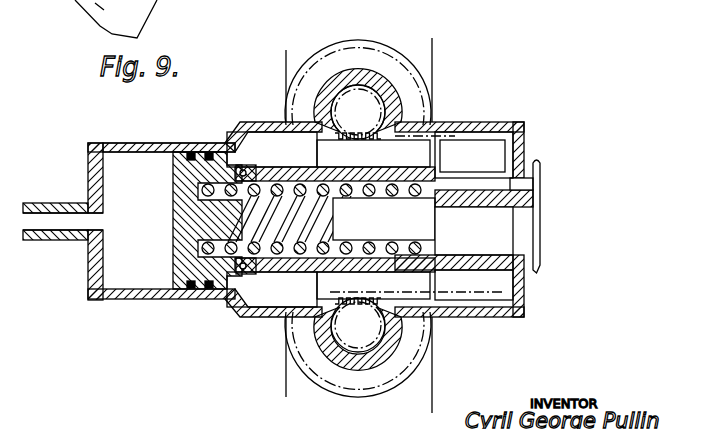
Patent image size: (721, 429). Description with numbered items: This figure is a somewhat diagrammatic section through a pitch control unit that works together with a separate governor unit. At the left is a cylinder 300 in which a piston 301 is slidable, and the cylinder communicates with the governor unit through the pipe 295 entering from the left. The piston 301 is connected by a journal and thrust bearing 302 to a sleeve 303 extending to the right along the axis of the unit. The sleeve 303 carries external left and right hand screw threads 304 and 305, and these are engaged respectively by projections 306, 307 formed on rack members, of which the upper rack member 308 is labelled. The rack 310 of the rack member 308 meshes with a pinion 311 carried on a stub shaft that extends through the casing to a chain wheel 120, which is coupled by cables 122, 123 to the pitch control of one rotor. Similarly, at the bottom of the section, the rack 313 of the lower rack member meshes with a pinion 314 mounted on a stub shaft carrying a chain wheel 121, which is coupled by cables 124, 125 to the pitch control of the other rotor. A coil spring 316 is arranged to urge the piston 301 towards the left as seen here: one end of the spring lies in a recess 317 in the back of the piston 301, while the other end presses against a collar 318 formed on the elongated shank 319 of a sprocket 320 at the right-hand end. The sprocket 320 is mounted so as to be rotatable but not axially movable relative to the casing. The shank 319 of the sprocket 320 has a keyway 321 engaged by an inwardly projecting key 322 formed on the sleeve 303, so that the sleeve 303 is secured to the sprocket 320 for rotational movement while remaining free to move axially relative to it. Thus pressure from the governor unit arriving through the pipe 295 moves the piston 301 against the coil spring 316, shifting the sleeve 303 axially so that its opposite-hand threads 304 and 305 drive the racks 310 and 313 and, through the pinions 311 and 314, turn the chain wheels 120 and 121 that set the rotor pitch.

The chain wheel 120 is at (385, 44).
The chain wheel 121 is at (372, 380).
The cable 122 is at (286, 50).
The cable 123 is at (432, 48).
The cable 124 is at (286, 385).
The cable 125 is at (432, 390).
The pipe 295 is at (75, 218).
The cylinder 300 is at (130, 300).
The piston 301 is at (195, 290).
The journal and thrust bearing 302 is at (232, 290).
The sleeve 303 is at (280, 262).
The left hand screw thread 304 is at (318, 176).
The right hand screw thread 305 is at (336, 262).
The projection 306 is at (413, 187).
The projection 307 is at (376, 263).
The rack member 308 is at (470, 121).
The rack 310 is at (403, 128).
The pinion 311 is at (352, 102).
The rack 313 is at (408, 320).
The pinion 314 is at (356, 335).
The coil spring 316 is at (400, 232).
The recess 317 is at (218, 185).
The collar 318 is at (432, 246).
The elongated shank 319 is at (454, 253).
The sprocket 320 is at (538, 268).
The keyway 321 is at (470, 196).
The key 322 is at (492, 168).